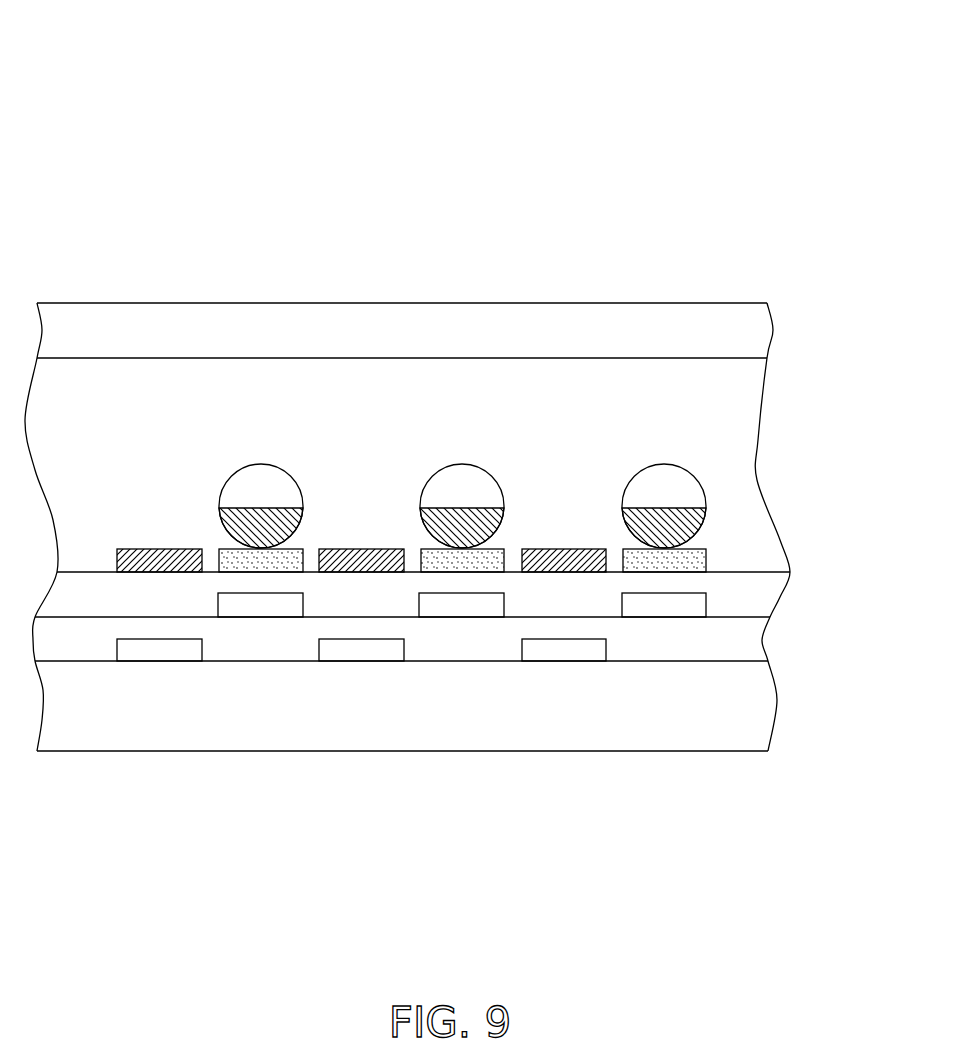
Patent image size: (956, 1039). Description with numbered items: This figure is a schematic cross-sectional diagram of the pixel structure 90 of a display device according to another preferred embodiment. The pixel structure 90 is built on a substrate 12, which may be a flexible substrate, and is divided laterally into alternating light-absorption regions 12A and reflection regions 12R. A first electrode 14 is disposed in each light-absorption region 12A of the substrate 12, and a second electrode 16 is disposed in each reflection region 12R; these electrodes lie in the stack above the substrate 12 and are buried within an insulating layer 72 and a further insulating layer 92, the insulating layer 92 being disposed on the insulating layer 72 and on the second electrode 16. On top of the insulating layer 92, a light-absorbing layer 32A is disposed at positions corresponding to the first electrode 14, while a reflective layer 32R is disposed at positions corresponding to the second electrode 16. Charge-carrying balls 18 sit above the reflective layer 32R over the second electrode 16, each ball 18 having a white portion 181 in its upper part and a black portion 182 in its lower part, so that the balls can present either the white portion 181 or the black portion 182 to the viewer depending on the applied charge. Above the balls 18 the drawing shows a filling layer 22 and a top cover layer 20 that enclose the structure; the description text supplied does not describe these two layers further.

The pixel structure 90 is at (744, 106).
The substrate 12 is at (723, 741).
The light-absorption region 12A is at (605, 279).
The reflection region 12R is at (706, 279).
The first electrode 14 is at (160, 652).
The second electrode 16 is at (268, 605).
The charge-carrying balls 18 is at (485, 466).
The white portion 181 is at (295, 481).
The black portion 182 is at (260, 447).
The cover layer 20 is at (724, 346).
The filling layer 22 is at (757, 493).
The light-absorbing layer 32A is at (164, 543).
The reflective layer 32R is at (219, 543).
The insulating layer 72 is at (762, 642).
The insulating layer 92 is at (770, 597).